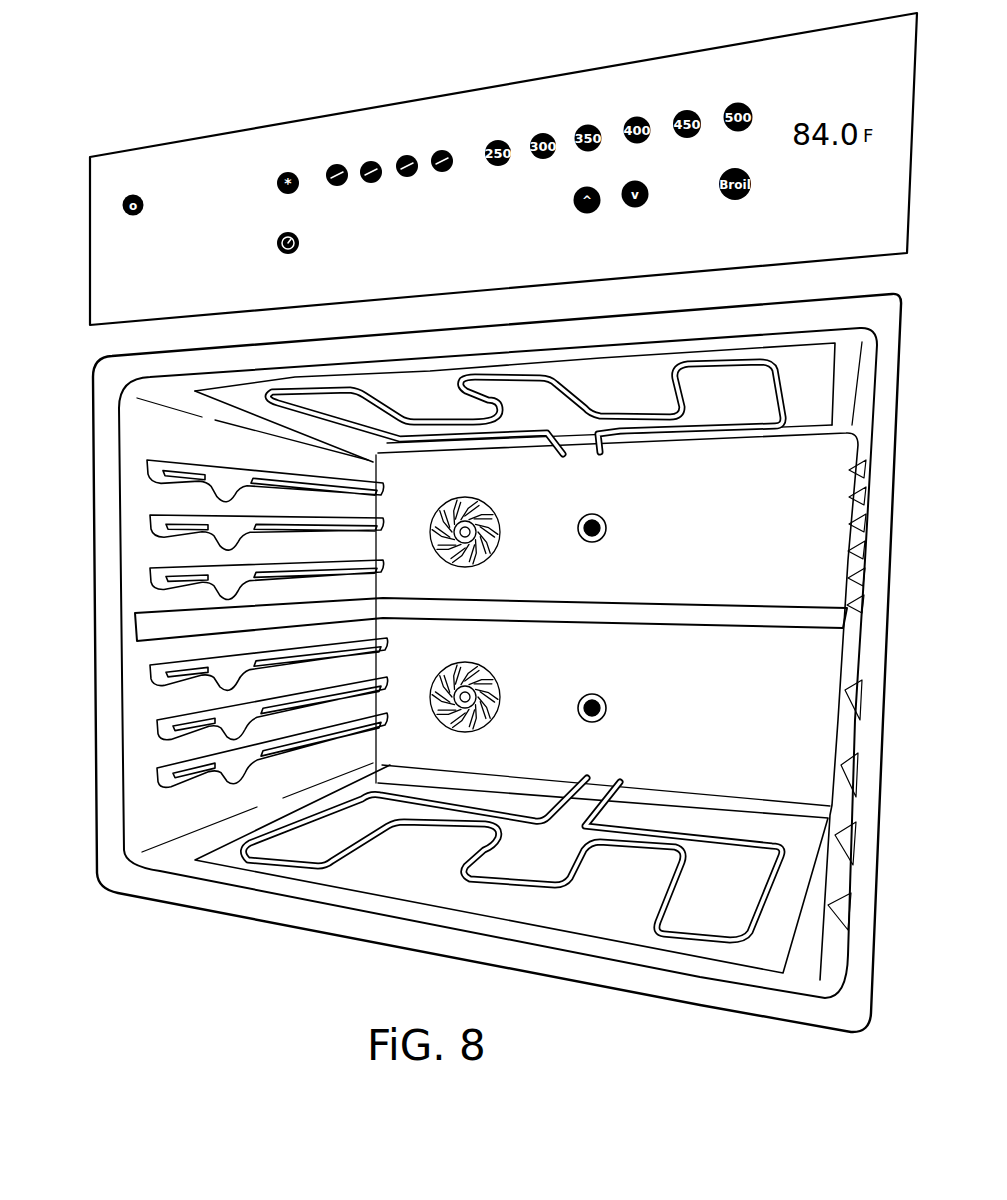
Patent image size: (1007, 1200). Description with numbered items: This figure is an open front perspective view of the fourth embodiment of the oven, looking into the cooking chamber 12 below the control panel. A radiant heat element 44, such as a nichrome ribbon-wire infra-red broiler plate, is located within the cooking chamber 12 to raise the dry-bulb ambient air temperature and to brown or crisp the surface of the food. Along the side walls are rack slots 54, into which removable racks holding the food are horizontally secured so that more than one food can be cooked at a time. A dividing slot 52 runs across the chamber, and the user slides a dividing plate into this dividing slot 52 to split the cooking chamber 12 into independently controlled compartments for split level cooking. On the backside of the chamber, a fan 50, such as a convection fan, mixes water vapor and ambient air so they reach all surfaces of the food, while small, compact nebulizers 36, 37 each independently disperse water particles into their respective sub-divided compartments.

The cooking chamber 12 is at (822, 502).
The nebulizer 36 is at (608, 533).
The nebulizer 37 is at (608, 713).
The radiant heat element 44 is at (780, 377).
The fan 50 is at (500, 520).
The dividing slot 52 is at (135, 623).
The rack slots 54 is at (150, 517).